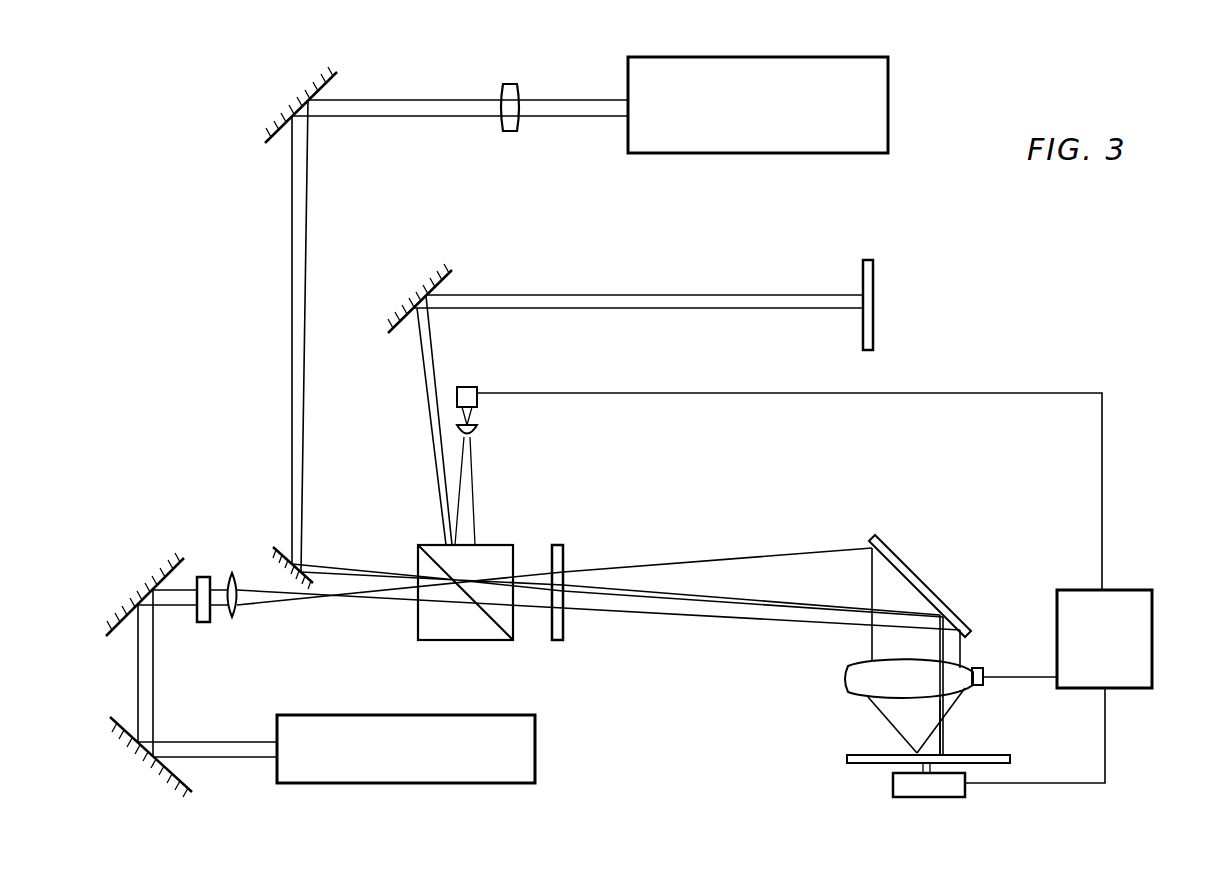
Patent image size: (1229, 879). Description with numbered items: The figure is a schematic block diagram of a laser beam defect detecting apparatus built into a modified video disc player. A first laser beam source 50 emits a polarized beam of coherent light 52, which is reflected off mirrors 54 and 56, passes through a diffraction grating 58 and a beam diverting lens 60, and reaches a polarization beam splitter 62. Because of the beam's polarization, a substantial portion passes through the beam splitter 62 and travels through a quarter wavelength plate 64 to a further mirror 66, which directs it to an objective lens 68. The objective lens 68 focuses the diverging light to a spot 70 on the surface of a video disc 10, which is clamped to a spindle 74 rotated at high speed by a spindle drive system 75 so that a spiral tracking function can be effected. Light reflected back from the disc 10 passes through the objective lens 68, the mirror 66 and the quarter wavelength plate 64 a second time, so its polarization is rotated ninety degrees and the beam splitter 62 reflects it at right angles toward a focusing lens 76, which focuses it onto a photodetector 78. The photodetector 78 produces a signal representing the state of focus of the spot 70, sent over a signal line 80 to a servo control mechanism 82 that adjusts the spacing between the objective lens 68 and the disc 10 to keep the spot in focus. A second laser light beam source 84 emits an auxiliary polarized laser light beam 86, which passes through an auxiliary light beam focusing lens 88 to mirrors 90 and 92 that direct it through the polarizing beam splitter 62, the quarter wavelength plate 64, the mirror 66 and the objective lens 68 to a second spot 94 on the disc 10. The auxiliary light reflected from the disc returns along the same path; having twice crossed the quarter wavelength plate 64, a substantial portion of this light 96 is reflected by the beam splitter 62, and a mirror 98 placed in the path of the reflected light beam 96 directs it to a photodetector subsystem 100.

The video disc 10 is at (850, 753).
The first laser beam source 50 is at (353, 714).
The beam of coherent light 52 is at (204, 741).
The mirror 54 is at (124, 716).
The mirror 56 is at (122, 630).
The diffraction grating 58 is at (200, 576).
The beam diverting lens 60 is at (232, 572).
The polarization beam splitter 62 is at (418, 627).
The quarter wavelength plate 64 is at (566, 542).
The mirror 66 is at (898, 558).
The objective lens 68 is at (848, 664).
The spot 70 is at (913, 752).
The spindle 74 is at (942, 748).
The spindle drive system 75 is at (893, 782).
The focusing lens 76 is at (480, 430).
The photodetector 78 is at (465, 385).
The signal line 80 is at (700, 393).
The servo control mechanism 82 is at (1152, 590).
The second laser light beam source 84 is at (740, 155).
The auxiliary polarized laser light beam 86 is at (588, 97).
The auxiliary light beam focusing lens 88 is at (503, 120).
The mirror 90 is at (270, 142).
The mirror 92 is at (279, 553).
The second spot 94 is at (945, 750).
The reflected light beam 96 is at (426, 355).
The mirror 98 is at (452, 280).
The photodetector subsystem 100 is at (875, 280).